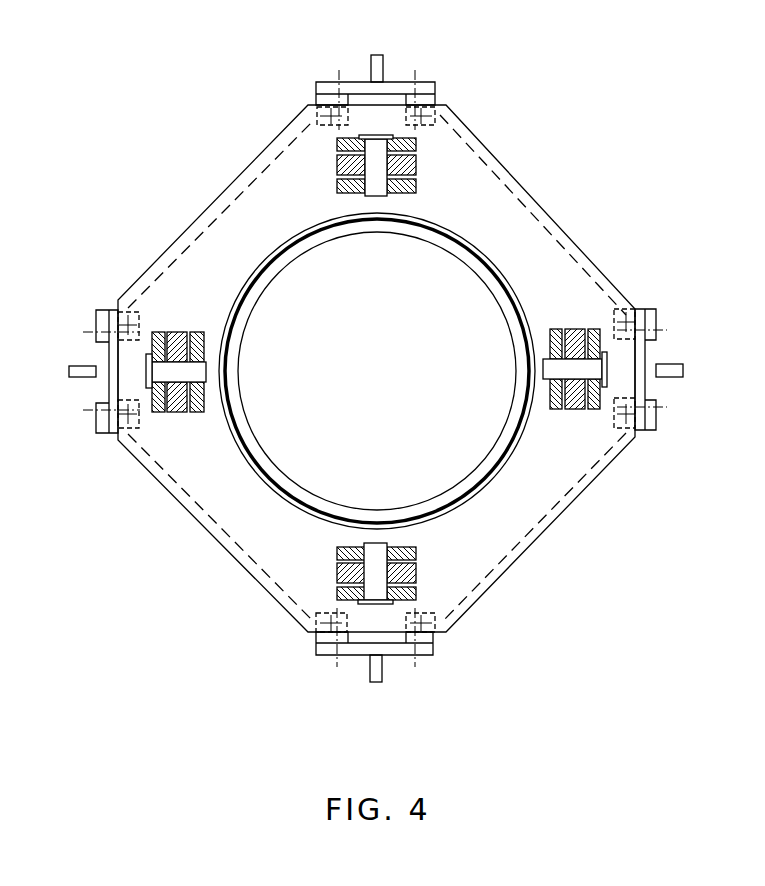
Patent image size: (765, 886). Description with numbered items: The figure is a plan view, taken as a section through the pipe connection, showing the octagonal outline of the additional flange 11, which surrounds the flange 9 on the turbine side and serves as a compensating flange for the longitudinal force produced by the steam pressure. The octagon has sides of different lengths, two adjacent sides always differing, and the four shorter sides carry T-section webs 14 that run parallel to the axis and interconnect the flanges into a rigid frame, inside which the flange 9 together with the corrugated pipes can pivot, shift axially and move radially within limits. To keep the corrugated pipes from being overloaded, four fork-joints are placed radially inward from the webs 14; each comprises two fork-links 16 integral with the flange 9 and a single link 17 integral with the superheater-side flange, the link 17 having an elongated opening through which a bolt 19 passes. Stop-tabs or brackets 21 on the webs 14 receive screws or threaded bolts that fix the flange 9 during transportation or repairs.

The flange on the turbine side 9 is at (527, 191).
The additional flange 11 is at (577, 253).
The T-section webs 14 is at (393, 90).
The fork-links 16 is at (188, 413).
The single link 17 is at (173, 337).
The bolt 19 is at (170, 377).
The stop-tabs or brackets 21 is at (628, 307).